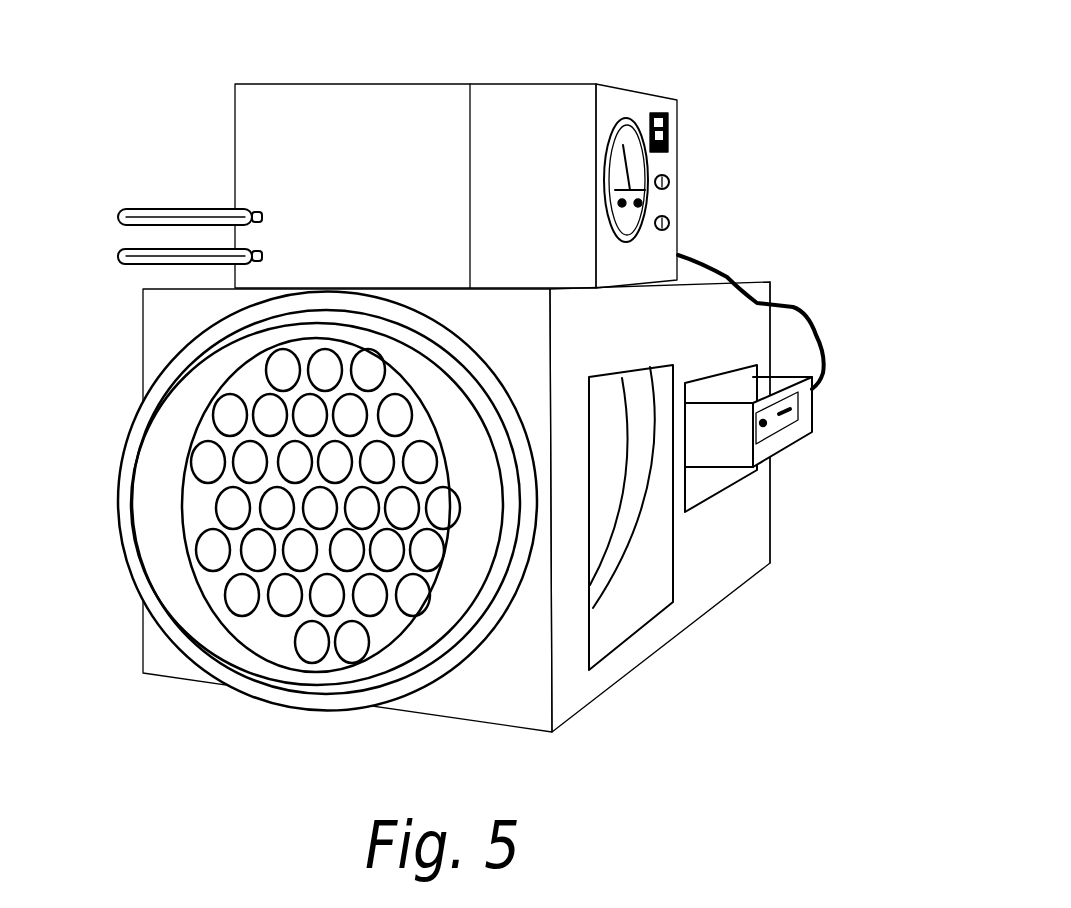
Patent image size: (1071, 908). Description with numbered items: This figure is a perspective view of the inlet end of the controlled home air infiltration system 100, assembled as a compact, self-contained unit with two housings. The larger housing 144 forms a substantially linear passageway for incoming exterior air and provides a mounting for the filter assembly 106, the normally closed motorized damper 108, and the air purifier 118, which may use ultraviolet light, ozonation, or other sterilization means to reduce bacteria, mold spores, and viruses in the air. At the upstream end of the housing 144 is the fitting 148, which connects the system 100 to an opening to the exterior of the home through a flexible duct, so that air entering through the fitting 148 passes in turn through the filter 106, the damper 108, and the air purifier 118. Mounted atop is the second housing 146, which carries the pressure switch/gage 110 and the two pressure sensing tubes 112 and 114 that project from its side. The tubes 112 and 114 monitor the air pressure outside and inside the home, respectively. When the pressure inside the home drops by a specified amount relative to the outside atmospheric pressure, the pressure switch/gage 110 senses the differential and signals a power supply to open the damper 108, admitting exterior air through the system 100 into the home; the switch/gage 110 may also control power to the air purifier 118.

The controlled home air infiltration system 100 is at (486, 377).
The filter assembly 106 is at (206, 460).
The motorized damper 108 is at (627, 520).
The pressure switch/gage 110 is at (624, 122).
The pressure sensing tube 112 is at (142, 262).
The pressure sensing tube 114 is at (162, 208).
The air purifier 118 is at (805, 417).
The housing 144 is at (772, 500).
The housing 146 is at (552, 182).
The fitting 148 is at (124, 538).